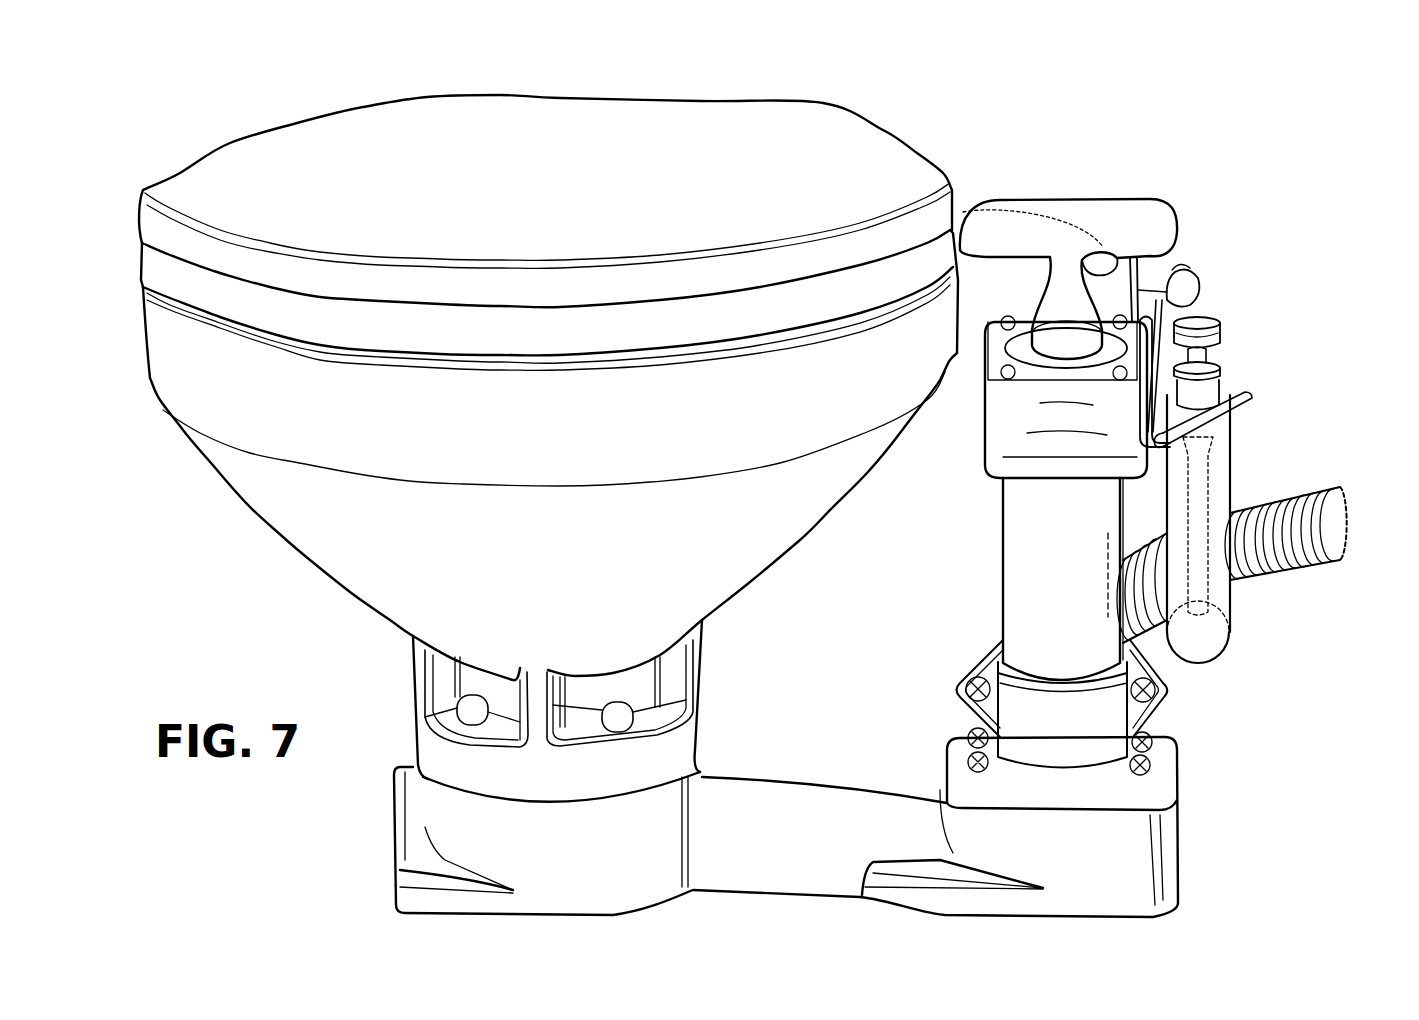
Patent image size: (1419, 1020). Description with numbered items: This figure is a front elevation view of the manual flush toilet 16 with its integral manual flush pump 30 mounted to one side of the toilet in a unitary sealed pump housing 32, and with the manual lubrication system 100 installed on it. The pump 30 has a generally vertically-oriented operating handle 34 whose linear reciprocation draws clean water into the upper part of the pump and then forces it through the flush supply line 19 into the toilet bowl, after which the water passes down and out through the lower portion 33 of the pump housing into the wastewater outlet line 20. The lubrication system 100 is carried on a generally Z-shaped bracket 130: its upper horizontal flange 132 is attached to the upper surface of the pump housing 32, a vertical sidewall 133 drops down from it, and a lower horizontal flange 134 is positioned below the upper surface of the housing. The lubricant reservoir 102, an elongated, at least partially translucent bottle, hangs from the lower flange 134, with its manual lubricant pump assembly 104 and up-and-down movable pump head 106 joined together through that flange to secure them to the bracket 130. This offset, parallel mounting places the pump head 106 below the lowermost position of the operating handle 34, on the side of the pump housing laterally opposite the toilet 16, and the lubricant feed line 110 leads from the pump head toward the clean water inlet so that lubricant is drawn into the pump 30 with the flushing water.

The manual flush toilet 16 is at (302, 106).
The flush supply line 19 is at (1002, 228).
The outlet line 20 is at (1257, 545).
The manual flush pump 30 is at (1050, 185).
The pump housing 32 is at (1000, 472).
The lower portion of the pump housing 33 is at (1023, 590).
The operating handle 34 is at (1107, 213).
The manual lubrication system 100 is at (1229, 364).
The lubricant reservoir 102 is at (1217, 497).
The manual lubricant pump assembly 104 is at (1222, 393).
The pump head 106 is at (1205, 313).
The lubricant feed line 110 is at (1162, 280).
The Z-shaped bracket 130 is at (1252, 396).
The upper horizontal flange 132 is at (1137, 258).
The vertical sidewall 133 is at (1198, 283).
The lower horizontal flange 134 is at (1170, 460).